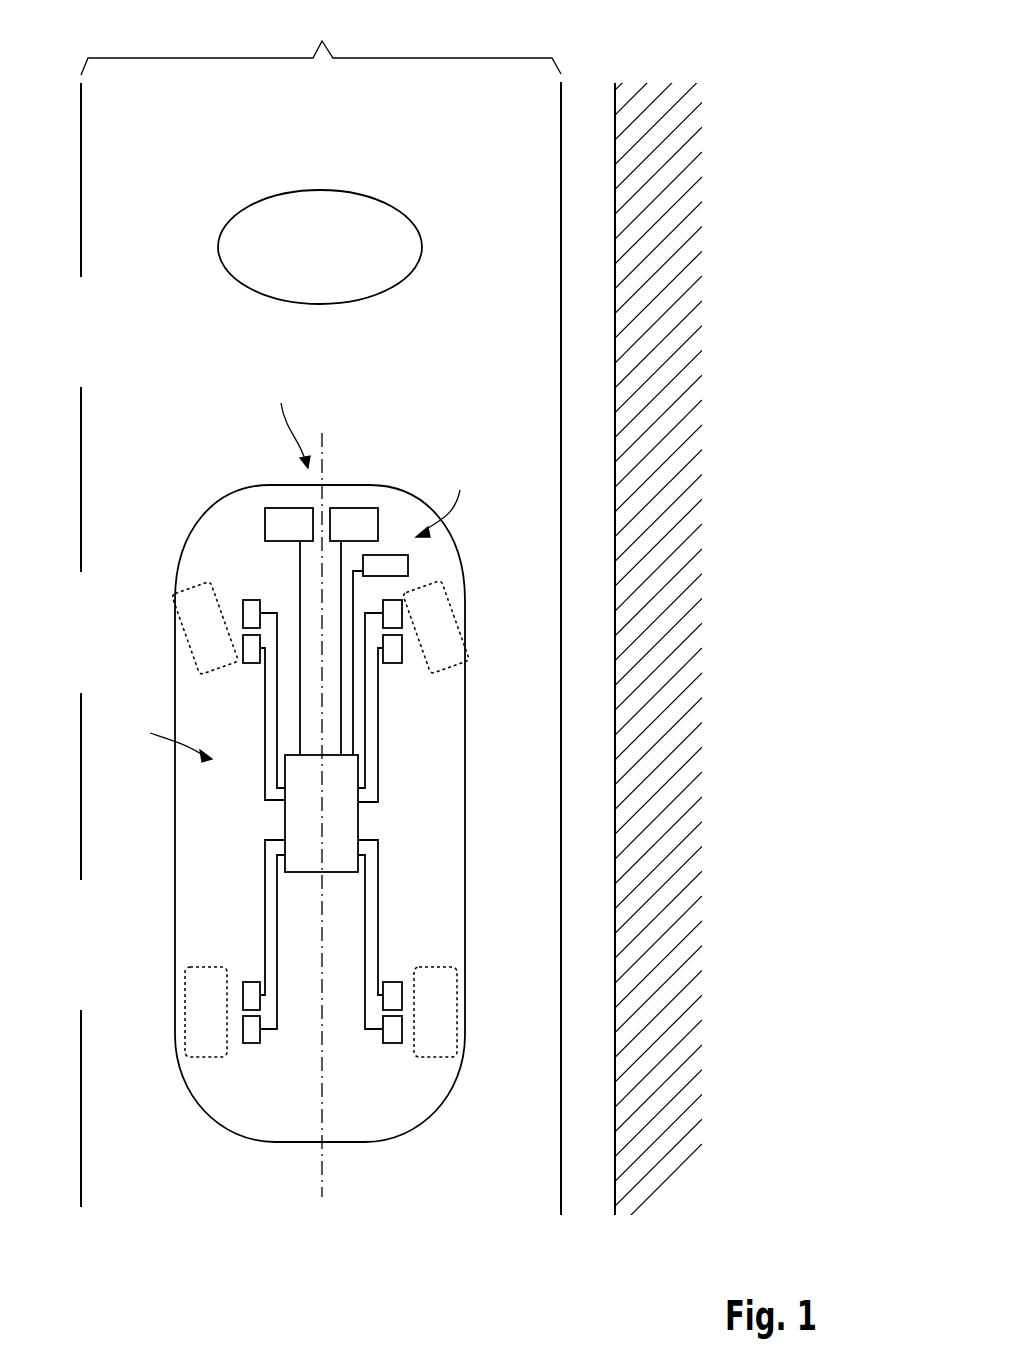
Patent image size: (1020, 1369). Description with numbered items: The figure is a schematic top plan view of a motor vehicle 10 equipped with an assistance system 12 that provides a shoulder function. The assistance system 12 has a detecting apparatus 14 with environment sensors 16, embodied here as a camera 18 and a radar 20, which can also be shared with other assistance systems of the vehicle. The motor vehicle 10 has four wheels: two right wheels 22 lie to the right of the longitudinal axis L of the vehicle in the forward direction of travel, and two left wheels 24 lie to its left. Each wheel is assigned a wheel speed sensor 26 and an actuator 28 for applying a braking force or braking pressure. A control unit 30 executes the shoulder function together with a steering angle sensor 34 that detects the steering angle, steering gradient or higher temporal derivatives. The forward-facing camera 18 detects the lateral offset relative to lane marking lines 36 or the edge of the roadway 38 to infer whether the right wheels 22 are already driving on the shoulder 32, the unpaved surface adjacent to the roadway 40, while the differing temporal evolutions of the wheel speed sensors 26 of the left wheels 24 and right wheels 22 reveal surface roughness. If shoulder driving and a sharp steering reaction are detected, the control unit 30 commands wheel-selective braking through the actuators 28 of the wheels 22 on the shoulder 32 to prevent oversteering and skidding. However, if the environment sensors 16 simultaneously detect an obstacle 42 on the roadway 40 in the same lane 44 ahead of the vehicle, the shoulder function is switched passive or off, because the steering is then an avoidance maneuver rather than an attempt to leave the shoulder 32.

The motor vehicle 10 is at (210, 512).
The assistance system 12 is at (166, 738).
The detecting apparatus 14 is at (447, 494).
The environment sensors 16 is at (290, 419).
The camera 18 is at (290, 505).
The radar 20 is at (355, 505).
The right wheels 22 is at (437, 625).
The left wheels 24 is at (205, 627).
The wheel speed sensor 26 is at (250, 598).
The actuator 28 is at (250, 663).
The control unit 30 is at (285, 812).
The shoulder 32 is at (687, 680).
The steering angle sensor 34 is at (385, 552).
The lane marking lines 36 is at (81, 1207).
The edge of the roadway 38 is at (615, 1215).
The roadway 40 is at (585, 100).
The obstacle 42 is at (320, 190).
The lane 44 is at (321, 37).
The longitudinal axis L is at (322, 1197).